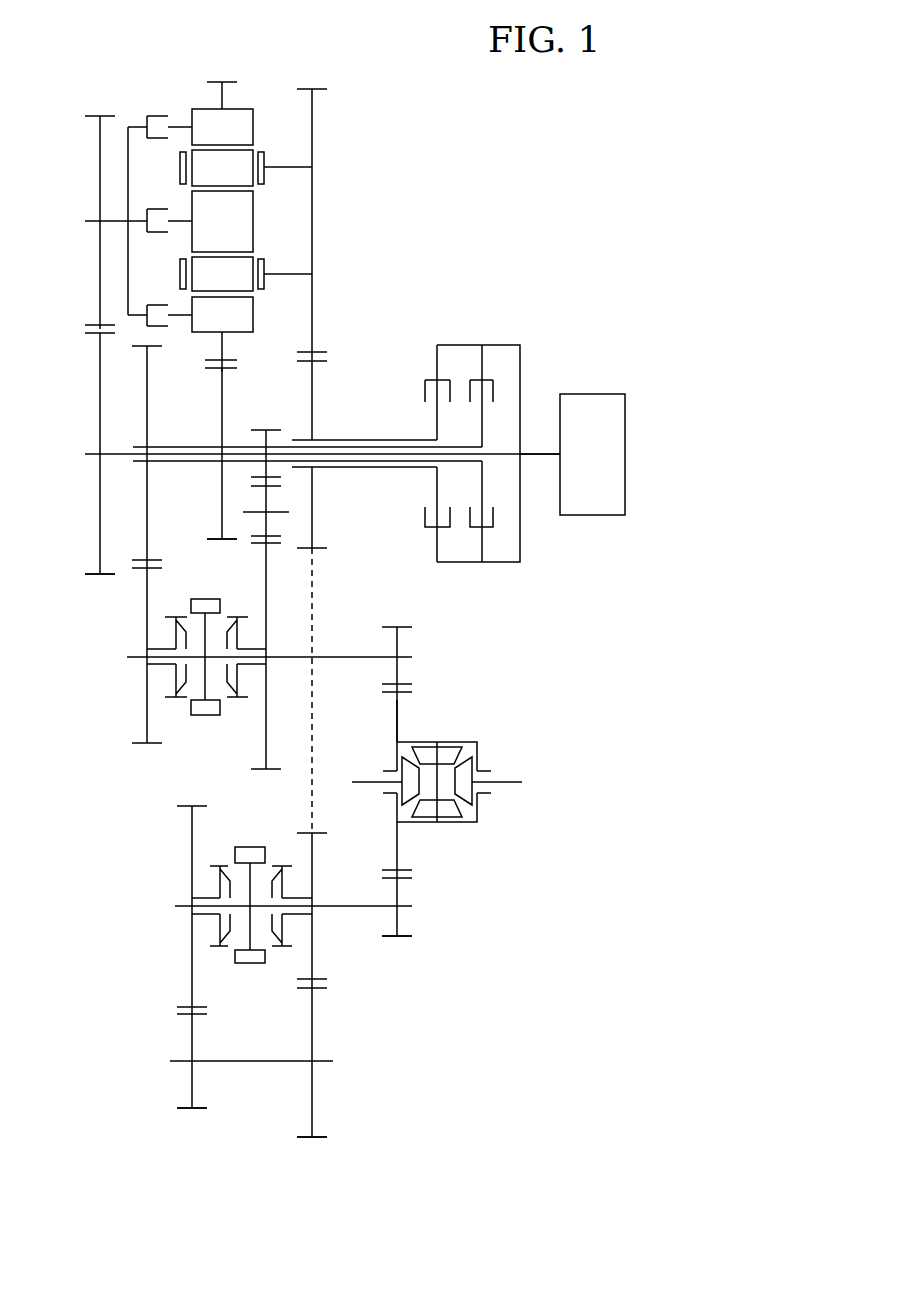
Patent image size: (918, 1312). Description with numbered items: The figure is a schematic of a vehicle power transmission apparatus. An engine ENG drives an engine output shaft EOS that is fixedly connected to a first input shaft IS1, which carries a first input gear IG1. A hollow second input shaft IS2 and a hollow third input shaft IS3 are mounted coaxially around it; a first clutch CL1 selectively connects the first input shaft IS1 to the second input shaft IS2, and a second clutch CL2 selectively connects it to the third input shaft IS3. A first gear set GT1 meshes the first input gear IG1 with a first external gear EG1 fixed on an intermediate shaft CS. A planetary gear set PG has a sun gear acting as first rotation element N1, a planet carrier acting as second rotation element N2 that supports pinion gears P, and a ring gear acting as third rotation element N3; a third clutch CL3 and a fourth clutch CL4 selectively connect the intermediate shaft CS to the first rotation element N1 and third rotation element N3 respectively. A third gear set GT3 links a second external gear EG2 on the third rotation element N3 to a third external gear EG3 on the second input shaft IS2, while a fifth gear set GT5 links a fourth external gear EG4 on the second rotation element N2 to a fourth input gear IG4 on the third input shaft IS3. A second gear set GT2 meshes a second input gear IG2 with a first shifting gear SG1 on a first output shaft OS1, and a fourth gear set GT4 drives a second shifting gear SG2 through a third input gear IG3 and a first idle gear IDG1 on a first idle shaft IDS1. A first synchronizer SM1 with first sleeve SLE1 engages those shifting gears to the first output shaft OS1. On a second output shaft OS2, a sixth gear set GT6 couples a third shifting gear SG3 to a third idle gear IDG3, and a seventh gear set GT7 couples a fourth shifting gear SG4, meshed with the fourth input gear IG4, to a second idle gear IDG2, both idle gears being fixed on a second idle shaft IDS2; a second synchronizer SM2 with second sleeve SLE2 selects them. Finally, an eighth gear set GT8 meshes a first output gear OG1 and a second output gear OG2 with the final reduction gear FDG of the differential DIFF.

The planetary gear set PG is at (220, 183).
The third rotation element N3 is at (222, 220).
The first rotation element N1 is at (222, 221).
The second rotation element N2 is at (246, 220).
The pinion gear P is at (222, 220).
The first external gear EG1 is at (100, 163).
The second external gear EG2 is at (222, 348).
The third external gear EG3 is at (222, 425).
The fourth external gear EG4 is at (312, 290).
The intermediate shaft CS is at (112, 222).
The first clutch CL1 is at (495, 345).
The second clutch CL2 is at (447, 345).
The third clutch CL3 is at (143, 212).
The fourth clutch CL4 is at (143, 314).
The first input gear IG1 is at (100, 393).
The second input gear IG2 is at (147, 390).
The third input gear IG3 is at (263, 437).
The fourth input gear IG4 is at (312, 377).
The first input shaft IS1 is at (338, 452).
The second input shaft IS2 is at (370, 446).
The third input shaft IS3 is at (402, 439).
The first idle shaft IDS1 is at (284, 511).
The first idle gear IDG1 is at (267, 523).
The second idle shaft IDS2 is at (333, 1064).
The second idle gear IDG2 is at (312, 1031).
The third idle gear IDG3 is at (192, 1037).
The engine ENG is at (592, 454).
The engine output shaft EOS is at (538, 455).
The first output shaft OS1 is at (348, 657).
The second output shaft OS2 is at (348, 906).
The first output gear OG1 is at (397, 643).
The second output gear OG2 is at (397, 888).
The first shifting gear SG1 is at (147, 585).
The second shifting gear SG2 is at (266, 601).
The third shifting gear SG3 is at (192, 845).
The fourth shifting gear SG4 is at (312, 851).
The first sleeve SLE1 is at (200, 714).
The second sleeve SLE2 is at (243, 963).
The first synchronizer SM1 is at (206, 691).
The second synchronizer SM2 is at (251, 941).
The final reduction gear FDG is at (397, 713).
The differential DIFF is at (487, 748).
The first gear set GT1 is at (100, 577).
The second gear set GT2 is at (147, 748).
The third gear set GT3 is at (222, 544).
The fourth gear set GT4 is at (266, 772).
The fifth gear set GT5 is at (315, 86).
The sixth gear set GT6 is at (190, 1111).
The seventh gear set GT7 is at (310, 1141).
The eighth gear set GT8 is at (397, 939).